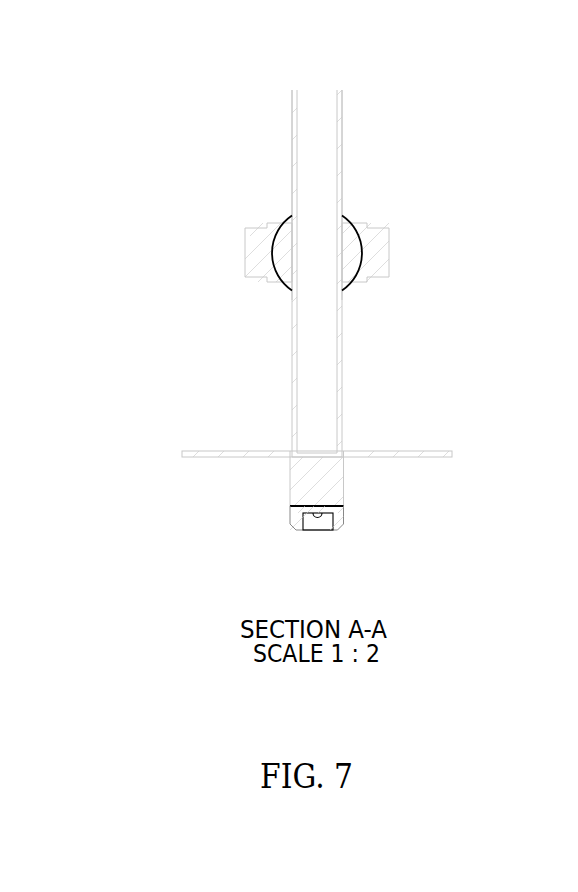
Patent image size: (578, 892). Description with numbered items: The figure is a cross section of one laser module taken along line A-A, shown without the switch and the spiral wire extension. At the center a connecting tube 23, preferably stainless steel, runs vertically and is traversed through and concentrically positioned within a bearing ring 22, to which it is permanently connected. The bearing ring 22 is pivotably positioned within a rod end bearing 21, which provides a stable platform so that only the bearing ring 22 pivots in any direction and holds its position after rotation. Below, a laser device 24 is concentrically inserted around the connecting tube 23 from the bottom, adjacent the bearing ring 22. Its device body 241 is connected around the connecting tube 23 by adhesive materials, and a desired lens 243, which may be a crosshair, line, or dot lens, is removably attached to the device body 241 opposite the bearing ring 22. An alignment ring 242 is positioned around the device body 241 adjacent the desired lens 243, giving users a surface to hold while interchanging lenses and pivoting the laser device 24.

The rod end bearing 21 is at (385, 242).
The bearing ring 22 is at (285, 230).
The connecting tube 23 is at (342, 143).
The laser device 24 is at (329, 344).
The device body 241 is at (292, 333).
The alignment ring 242 is at (238, 457).
The desired lens 243 is at (335, 520).